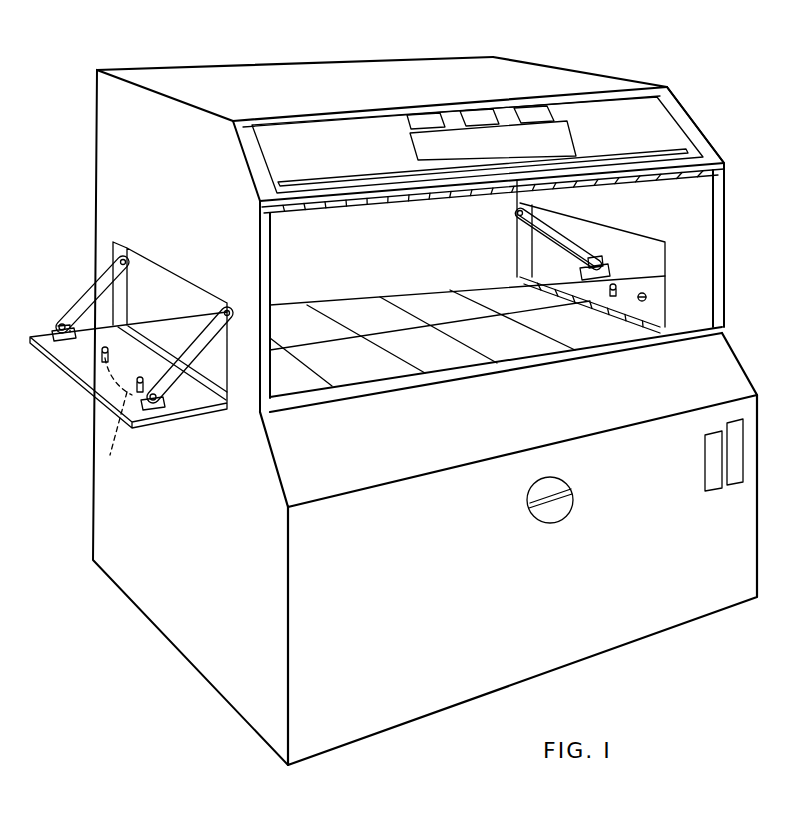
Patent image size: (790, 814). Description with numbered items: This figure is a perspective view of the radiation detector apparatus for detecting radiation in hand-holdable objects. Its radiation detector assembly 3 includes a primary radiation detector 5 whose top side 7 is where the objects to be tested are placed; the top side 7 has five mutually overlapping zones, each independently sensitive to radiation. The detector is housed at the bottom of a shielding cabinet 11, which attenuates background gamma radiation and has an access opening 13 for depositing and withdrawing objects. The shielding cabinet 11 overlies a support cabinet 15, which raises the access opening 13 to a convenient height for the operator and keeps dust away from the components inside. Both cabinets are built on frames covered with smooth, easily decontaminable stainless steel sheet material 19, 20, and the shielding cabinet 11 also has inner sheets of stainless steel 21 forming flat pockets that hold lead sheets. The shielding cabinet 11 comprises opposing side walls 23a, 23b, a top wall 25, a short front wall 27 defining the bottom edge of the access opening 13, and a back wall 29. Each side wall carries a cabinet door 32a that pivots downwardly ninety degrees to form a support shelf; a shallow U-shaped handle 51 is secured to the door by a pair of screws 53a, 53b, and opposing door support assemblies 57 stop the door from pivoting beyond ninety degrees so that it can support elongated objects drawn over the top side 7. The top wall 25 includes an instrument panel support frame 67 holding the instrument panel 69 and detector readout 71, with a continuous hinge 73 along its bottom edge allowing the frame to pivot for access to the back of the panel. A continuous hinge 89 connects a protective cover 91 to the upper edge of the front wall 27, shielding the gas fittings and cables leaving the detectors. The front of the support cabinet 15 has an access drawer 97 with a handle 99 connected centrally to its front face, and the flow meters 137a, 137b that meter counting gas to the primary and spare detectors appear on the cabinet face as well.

The shielding cabinet 11 is at (301, 44).
The instrument panel support frame 67 is at (221, 66).
The top wall 25 is at (379, 91).
The side wall 23a is at (181, 211).
The stainless steel sheet material 19 is at (103, 158).
The instrument panel 69 is at (347, 154).
The detector readout 71 is at (560, 131).
The continuous hinge 73 is at (413, 193).
The back wall 29 is at (359, 261).
The inner sheets of stainless steel 21 is at (700, 248).
The access opening 13 is at (680, 216).
The side wall 23b is at (653, 211).
The primary radiation detector 5 is at (427, 354).
The radiation detector assembly 3 is at (376, 350).
The top side 7 is at (540, 342).
The continuous hinge 89 is at (510, 369).
The protective cover 91 is at (630, 340).
The front wall 27 is at (461, 443).
The access drawer 97 is at (432, 601).
The stainless steel sheet material 20 is at (103, 520).
The support cabinet 15 is at (96, 491).
The knob 99 is at (545, 525).
The flow meter 137a is at (705, 470).
The flow meter 137b is at (733, 486).
The cabinet door 32a is at (198, 400).
The door support assembly 57 is at (80, 288).
The screw 53a is at (147, 376).
The screw 53b is at (100, 351).
The handle 51 is at (118, 409).